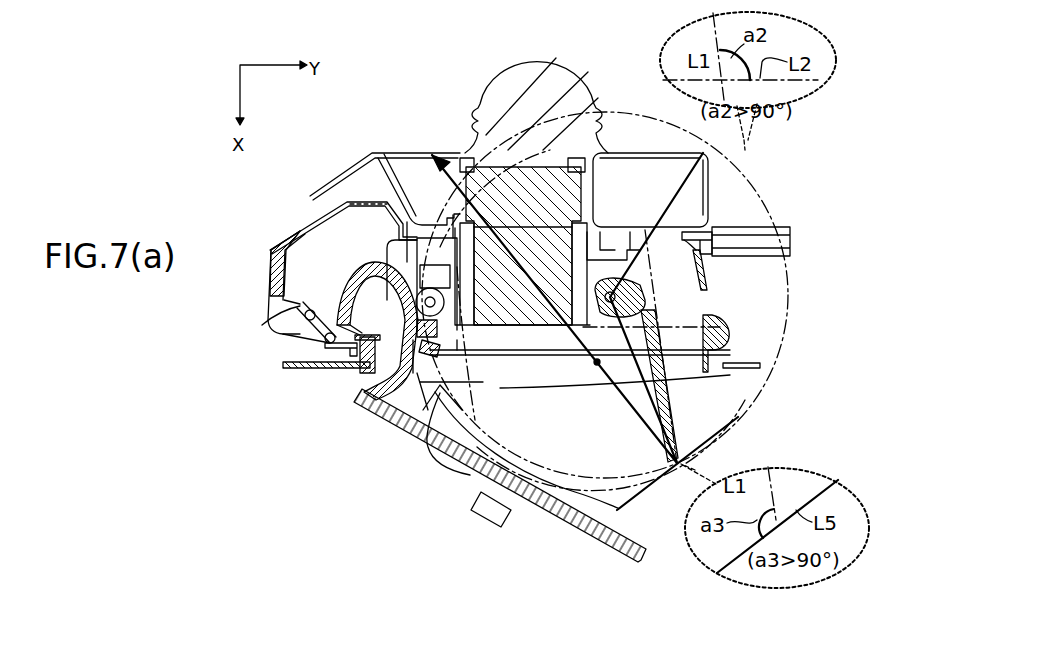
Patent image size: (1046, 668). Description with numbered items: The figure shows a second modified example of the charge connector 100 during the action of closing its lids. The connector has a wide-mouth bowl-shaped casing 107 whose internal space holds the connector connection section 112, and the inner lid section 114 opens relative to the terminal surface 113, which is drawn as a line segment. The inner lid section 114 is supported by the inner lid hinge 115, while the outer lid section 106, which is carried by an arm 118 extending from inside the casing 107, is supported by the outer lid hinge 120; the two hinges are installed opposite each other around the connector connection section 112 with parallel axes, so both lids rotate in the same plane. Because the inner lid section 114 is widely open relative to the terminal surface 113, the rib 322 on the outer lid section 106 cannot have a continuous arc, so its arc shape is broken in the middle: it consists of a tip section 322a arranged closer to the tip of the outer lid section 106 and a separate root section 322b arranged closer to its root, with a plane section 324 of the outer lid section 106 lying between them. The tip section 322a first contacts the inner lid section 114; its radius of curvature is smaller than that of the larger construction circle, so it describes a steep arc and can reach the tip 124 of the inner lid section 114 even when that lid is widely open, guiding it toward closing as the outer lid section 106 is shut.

The charge connector 100 is at (383, 141).
The outer lid section 106 is at (438, 426).
The casing 107 is at (707, 272).
The connector connection section 112 is at (522, 246).
The terminal surface 113 is at (506, 354).
The inner lid section 114 is at (663, 360).
The inner lid hinge 115 is at (523, 254).
The arm 118 is at (377, 398).
The outer lid hinge 120 is at (270, 327).
The tip 124 is at (663, 457).
The rib 322 is at (420, 590).
The tip section 322a is at (632, 535).
The root section 322b is at (440, 428).
The plane section 324 is at (497, 515).